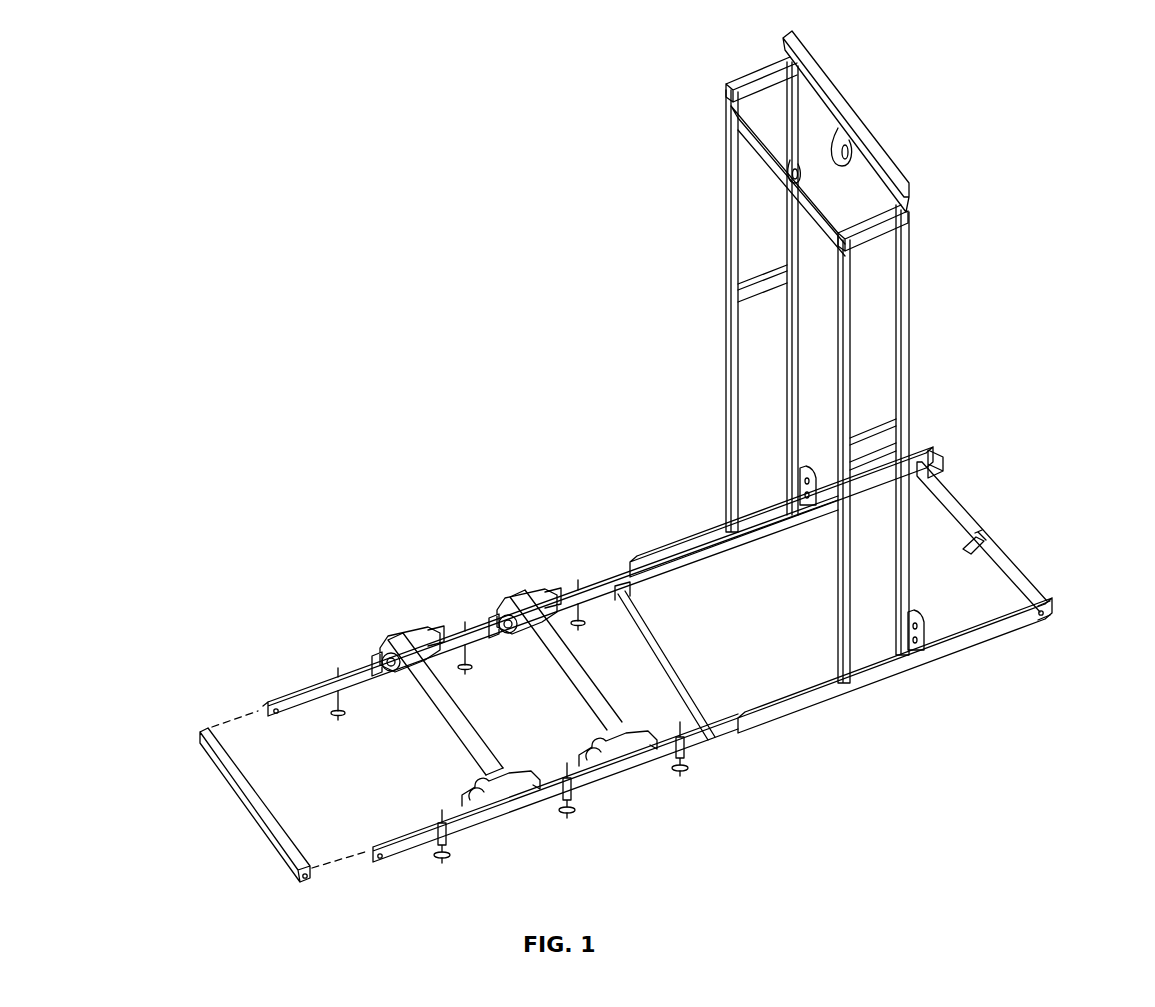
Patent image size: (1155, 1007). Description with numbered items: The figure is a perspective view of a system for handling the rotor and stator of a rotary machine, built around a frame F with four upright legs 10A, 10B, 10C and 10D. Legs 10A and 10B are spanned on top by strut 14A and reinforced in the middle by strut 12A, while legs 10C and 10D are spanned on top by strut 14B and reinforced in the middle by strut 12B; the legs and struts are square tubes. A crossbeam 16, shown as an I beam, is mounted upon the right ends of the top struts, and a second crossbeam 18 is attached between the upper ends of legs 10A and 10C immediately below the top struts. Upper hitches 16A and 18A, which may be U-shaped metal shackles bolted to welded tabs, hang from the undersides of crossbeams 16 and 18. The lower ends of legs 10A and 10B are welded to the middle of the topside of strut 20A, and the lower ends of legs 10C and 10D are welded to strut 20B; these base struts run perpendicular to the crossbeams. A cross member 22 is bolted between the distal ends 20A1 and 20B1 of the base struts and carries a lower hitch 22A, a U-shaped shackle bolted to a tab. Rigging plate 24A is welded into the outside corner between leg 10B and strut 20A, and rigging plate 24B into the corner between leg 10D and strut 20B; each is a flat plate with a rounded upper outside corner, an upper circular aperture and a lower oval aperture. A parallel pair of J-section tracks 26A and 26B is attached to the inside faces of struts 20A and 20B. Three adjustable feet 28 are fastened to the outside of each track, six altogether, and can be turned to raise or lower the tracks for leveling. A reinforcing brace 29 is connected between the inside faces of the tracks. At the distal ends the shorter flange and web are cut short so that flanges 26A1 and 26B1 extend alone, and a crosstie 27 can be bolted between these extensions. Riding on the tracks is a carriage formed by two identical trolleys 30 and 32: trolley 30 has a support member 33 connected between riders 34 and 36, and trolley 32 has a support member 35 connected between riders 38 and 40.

The frame F is at (934, 315).
The upright leg 10A is at (836, 575).
The upright leg 10B is at (908, 370).
The upright leg 10C is at (723, 187).
The upright leg 10D is at (783, 332).
The strut 12A is at (876, 430).
The strut 12B is at (760, 281).
The strut 14A is at (888, 238).
The strut 14B is at (765, 68).
The crossbeam 16 is at (884, 151).
The upper hitch 16A is at (833, 136).
The crossbeam 18 is at (748, 158).
The upper hitch 18A is at (778, 210).
The strut 20A is at (823, 700).
The distal end 20A1 is at (1053, 611).
The strut 20B is at (672, 543).
The distal end 20B1 is at (934, 457).
The cross member 22 is at (1022, 578).
The lower hitch 22A is at (965, 549).
The rigging plate 24A is at (921, 628).
The rigging plate 24B is at (801, 464).
The track 26A is at (698, 747).
The upright flange 26A1 is at (366, 854).
The track 26B is at (609, 575).
The upright flange 26B1 is at (278, 705).
The crosstie 27 is at (240, 800).
The adjustable foot 28 is at (338, 727).
The reinforcing brace 29 is at (686, 662).
The trolley 30 is at (520, 664).
The trolley 32 is at (560, 683).
The support member 33 is at (431, 709).
The rider 34 is at (401, 626).
The support member 35 is at (592, 680).
The rider 36 is at (524, 761).
The rider 38 is at (514, 584).
The rider 40 is at (640, 721).